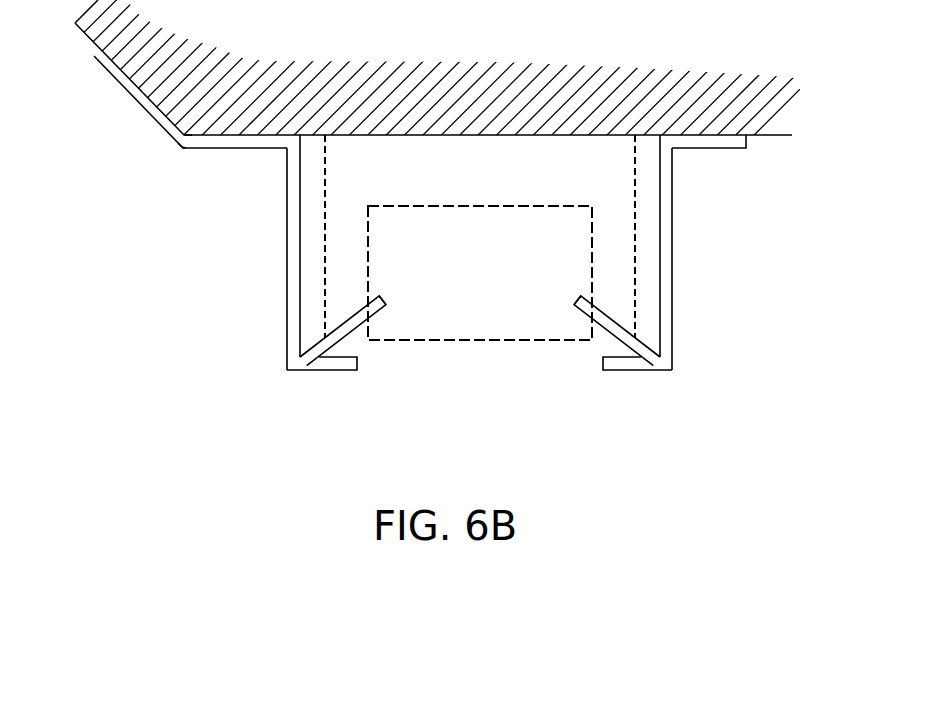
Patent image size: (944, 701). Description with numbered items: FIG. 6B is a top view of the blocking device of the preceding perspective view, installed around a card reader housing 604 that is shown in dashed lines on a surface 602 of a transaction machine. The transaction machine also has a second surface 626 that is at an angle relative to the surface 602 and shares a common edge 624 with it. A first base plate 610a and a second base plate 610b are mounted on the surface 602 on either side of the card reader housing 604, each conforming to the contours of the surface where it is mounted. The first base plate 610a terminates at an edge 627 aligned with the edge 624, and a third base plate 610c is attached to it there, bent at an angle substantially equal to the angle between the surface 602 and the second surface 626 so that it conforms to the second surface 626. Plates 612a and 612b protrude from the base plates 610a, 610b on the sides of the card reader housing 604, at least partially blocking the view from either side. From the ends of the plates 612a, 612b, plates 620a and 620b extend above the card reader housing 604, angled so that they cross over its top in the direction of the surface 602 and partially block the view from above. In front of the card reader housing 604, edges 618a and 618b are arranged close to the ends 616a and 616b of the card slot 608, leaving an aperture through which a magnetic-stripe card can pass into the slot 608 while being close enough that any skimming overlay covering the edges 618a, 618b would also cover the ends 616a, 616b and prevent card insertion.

The surface 602 is at (776, 137).
The card reader housing 604 is at (494, 175).
The card slot 608 is at (483, 328).
The first base plate 610a is at (232, 150).
The second base plate 610b is at (706, 150).
The third base plate 610c is at (140, 104).
The plate 612a is at (287, 268).
The plate 612b is at (673, 257).
The end of card slot 616a is at (371, 342).
The end of card slot 616b is at (593, 341).
The edge 618a is at (333, 372).
The edge 618b is at (637, 372).
The plate 620a is at (386, 297).
The plate 620b is at (573, 297).
The edge 624 is at (193, 132).
The second surface 626 is at (76, 27).
The edge 627 is at (182, 151).